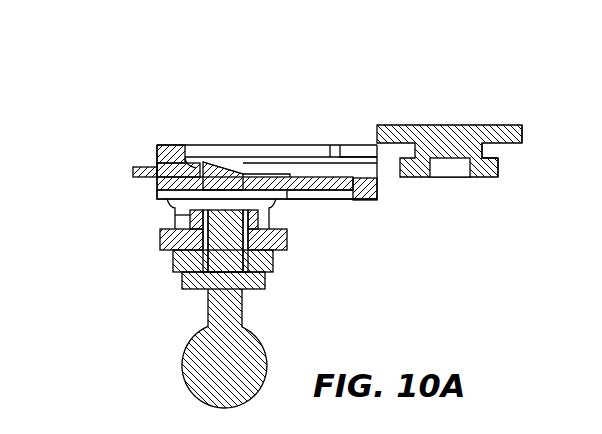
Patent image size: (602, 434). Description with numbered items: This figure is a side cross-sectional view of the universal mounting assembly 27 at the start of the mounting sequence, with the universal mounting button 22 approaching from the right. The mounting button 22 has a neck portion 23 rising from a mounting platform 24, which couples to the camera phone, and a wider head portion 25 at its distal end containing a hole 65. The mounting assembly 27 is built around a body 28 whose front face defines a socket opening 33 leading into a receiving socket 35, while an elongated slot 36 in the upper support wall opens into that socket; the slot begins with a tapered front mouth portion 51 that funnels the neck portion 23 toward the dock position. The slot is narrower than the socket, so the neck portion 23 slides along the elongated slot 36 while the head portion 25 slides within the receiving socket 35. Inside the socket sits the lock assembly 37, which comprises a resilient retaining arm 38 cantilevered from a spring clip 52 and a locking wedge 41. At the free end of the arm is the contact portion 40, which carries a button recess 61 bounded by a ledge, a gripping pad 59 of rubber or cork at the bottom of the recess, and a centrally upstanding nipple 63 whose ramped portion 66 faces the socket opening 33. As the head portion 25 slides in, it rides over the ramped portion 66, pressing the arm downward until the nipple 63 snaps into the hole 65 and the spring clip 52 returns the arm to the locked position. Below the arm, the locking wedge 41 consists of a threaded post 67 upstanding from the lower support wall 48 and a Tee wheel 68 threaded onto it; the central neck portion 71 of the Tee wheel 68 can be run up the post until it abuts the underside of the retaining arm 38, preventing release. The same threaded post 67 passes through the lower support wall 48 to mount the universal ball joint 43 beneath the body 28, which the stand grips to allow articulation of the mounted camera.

The universal mounting assembly 27 is at (322, 96).
The universal mounting button 22 is at (464, 121).
The mounting platform 24 is at (522, 128).
The neck portion 23 is at (485, 148).
The head portion 25 is at (500, 166).
The hole 65 is at (468, 163).
The socket opening 33 is at (370, 176).
The spring clip 52 is at (362, 200).
The elongated slot 36 is at (301, 148).
The front mouth portion 51 is at (354, 150).
The receiving socket 35 is at (261, 163).
The ramped portion 66 is at (237, 153).
The pad 59 is at (201, 163).
The nipple 63 is at (220, 165).
The contact portion 40 is at (181, 158).
The button recess 61 is at (140, 167).
The resilient retaining arm 38 is at (158, 183).
The lock assembly 37 is at (134, 212).
The central neck portion 71 is at (173, 217).
The locking wedge 41 is at (147, 254).
The body 28 is at (262, 212).
The Tee wheel 68 is at (288, 240).
The threaded post 67 is at (272, 262).
The lower support wall 48 is at (172, 271).
The universal ball joint 43 is at (203, 374).